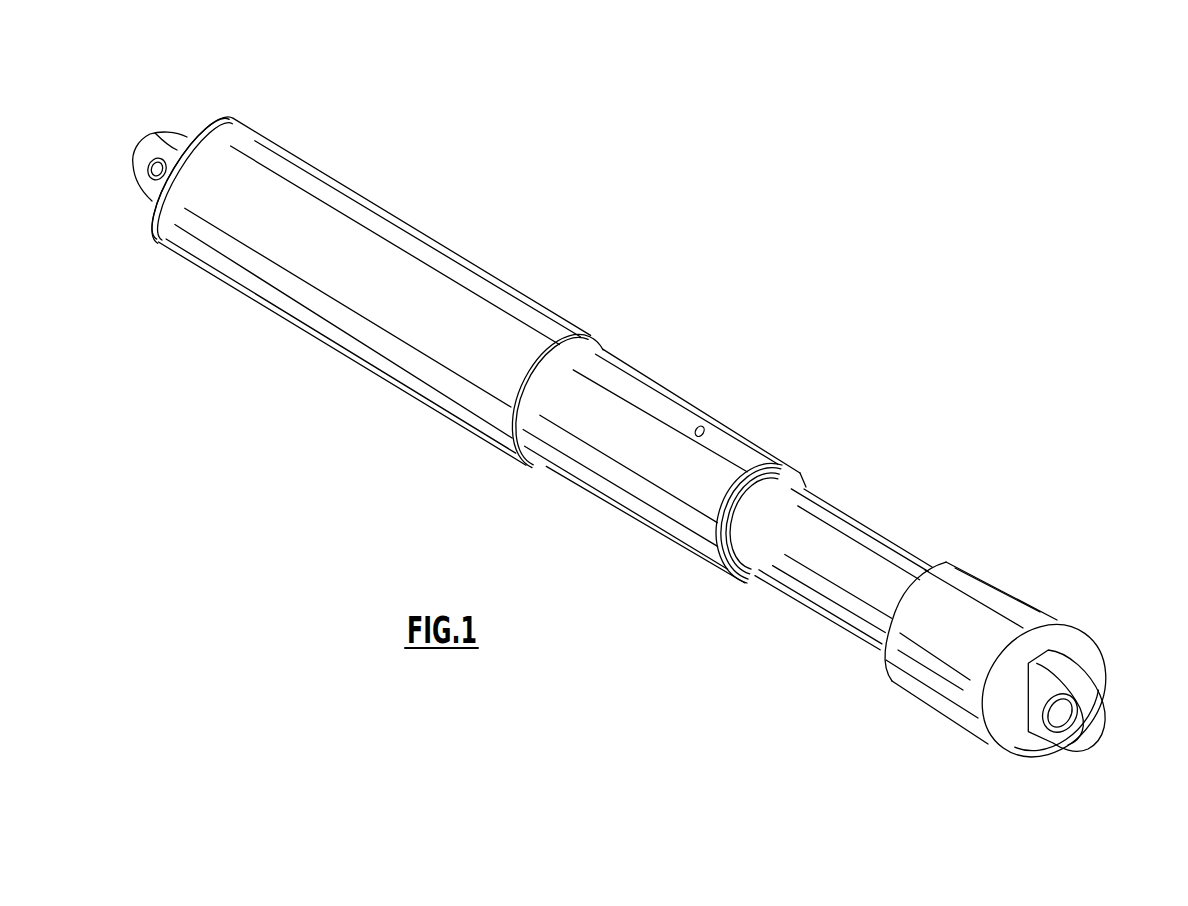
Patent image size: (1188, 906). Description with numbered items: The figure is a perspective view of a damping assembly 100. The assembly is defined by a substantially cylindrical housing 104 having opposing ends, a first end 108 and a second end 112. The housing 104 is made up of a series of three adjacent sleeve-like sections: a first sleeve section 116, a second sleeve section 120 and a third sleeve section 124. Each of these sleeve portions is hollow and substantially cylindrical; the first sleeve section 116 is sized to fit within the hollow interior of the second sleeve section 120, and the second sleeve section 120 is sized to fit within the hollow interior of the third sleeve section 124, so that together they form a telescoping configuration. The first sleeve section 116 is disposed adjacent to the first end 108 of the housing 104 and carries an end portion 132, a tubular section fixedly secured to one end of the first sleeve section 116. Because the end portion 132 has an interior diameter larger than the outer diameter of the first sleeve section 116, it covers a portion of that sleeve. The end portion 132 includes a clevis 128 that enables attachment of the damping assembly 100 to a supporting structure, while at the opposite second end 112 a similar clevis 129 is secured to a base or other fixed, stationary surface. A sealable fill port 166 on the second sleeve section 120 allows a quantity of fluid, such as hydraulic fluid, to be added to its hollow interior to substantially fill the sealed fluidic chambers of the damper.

The damping assembly 100 is at (678, 155).
The housing 104 is at (560, 298).
The first end 108 is at (988, 668).
The second end 112 is at (211, 121).
The first sleeve section 116 is at (866, 538).
The second sleeve section 120 is at (680, 400).
The third sleeve section 124 is at (403, 243).
The clevis 128 is at (1090, 690).
The clevis 129 is at (137, 155).
The end portion 132 is at (935, 690).
The sealable fill port 166 is at (706, 429).